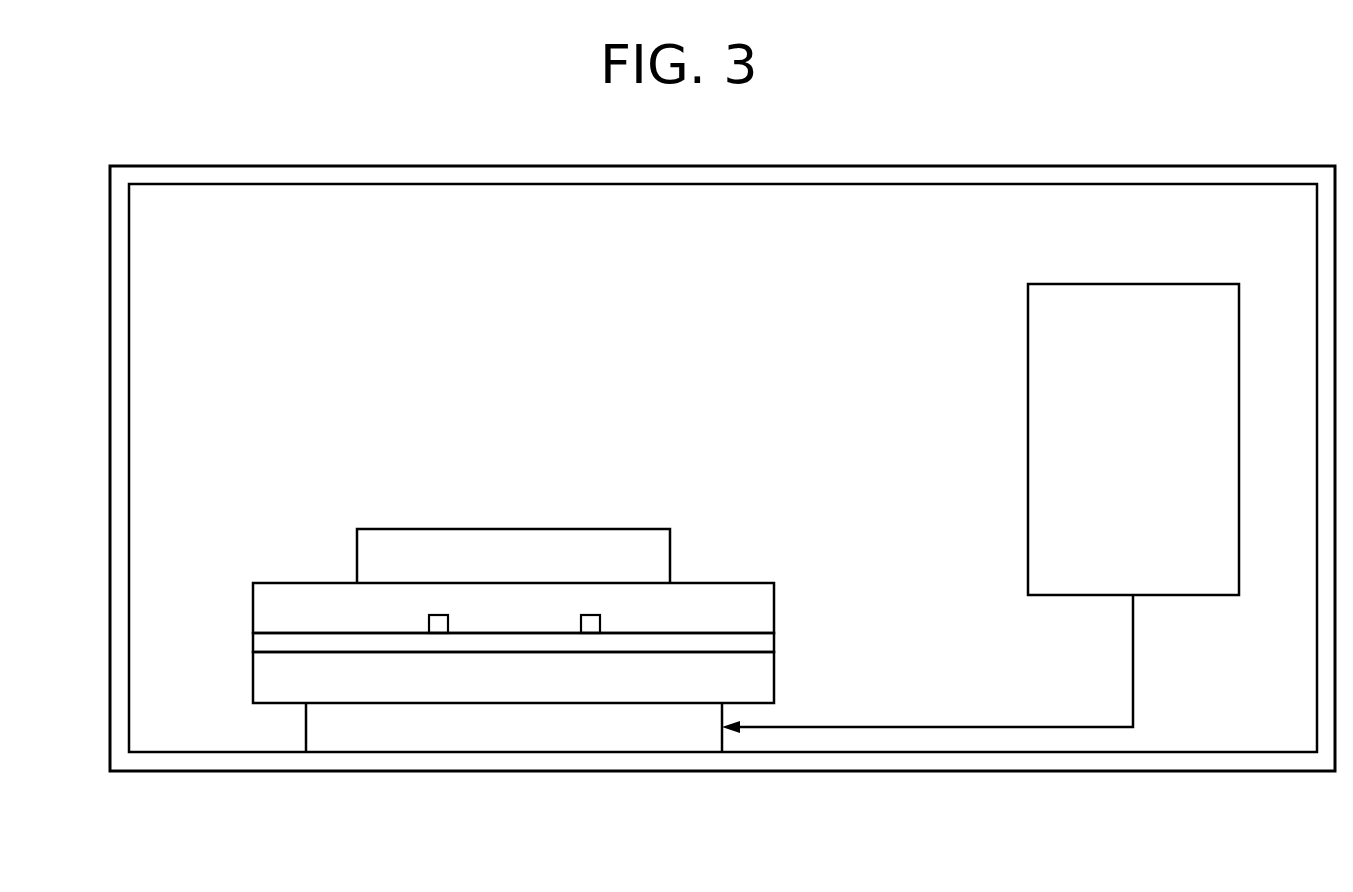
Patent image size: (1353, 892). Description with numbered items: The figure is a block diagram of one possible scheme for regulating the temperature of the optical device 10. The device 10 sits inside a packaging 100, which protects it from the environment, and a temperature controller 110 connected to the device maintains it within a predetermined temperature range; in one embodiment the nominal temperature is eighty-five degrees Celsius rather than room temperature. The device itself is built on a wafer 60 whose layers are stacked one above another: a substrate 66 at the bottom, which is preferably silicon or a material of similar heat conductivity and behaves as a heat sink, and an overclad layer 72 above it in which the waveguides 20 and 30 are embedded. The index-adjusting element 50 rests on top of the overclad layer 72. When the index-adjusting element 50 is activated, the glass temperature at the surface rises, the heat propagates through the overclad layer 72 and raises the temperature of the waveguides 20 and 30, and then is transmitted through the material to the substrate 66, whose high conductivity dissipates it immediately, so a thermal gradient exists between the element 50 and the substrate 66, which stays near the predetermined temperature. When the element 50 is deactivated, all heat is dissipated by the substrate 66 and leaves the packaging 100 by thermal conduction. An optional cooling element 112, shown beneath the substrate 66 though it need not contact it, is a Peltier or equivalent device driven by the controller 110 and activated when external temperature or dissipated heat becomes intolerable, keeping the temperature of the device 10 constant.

The optical device 10 is at (722, 469).
The waveguide 20 is at (429, 615).
The waveguide 30 is at (600, 615).
The index-adjusting element 50 is at (548, 545).
The wafer 60 is at (594, 582).
The substrate 66 is at (741, 671).
The overclad layer 72 is at (715, 597).
The packaging 100 is at (1187, 165).
The temperature controller 110 is at (1047, 455).
The cooling element 112 is at (478, 732).